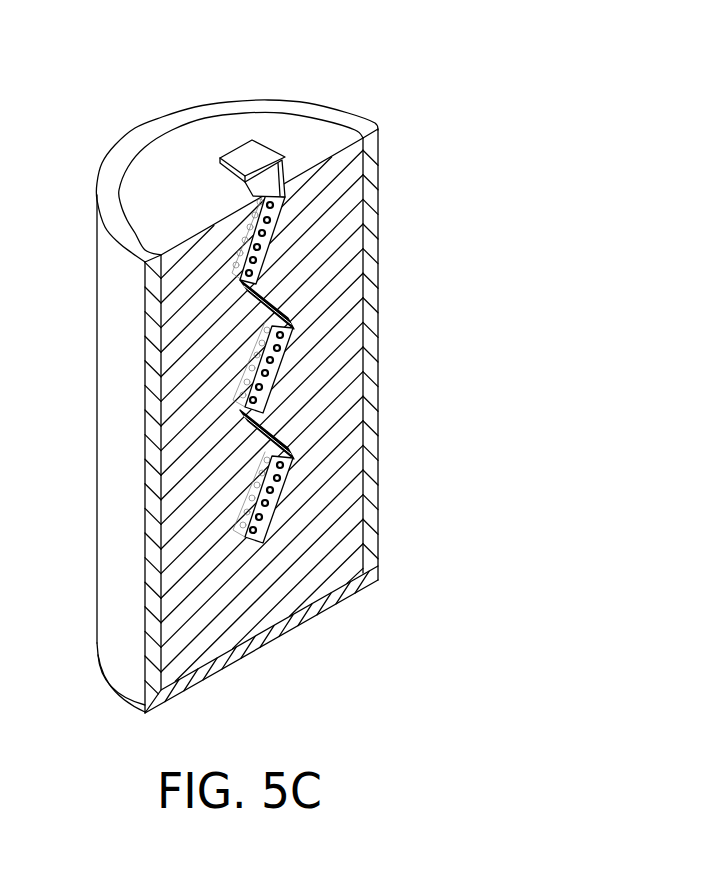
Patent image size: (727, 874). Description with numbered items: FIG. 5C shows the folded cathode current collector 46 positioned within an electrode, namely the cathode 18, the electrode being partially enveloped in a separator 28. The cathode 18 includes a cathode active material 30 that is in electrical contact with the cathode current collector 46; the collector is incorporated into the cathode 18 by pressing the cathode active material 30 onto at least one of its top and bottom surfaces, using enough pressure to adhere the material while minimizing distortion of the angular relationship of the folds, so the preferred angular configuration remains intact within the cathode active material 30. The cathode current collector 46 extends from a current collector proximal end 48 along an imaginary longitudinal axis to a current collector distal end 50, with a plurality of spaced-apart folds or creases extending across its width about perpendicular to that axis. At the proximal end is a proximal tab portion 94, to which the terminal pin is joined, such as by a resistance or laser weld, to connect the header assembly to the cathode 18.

The cathode 18 is at (500, 80).
The separator 28 is at (378, 289).
The cathode active material 30 is at (347, 467).
The cathode current collector 46 is at (264, 251).
The current collector proximal end 48 is at (283, 167).
The current collector distal end 50 is at (267, 523).
The proximal tab portion 94 is at (242, 153).